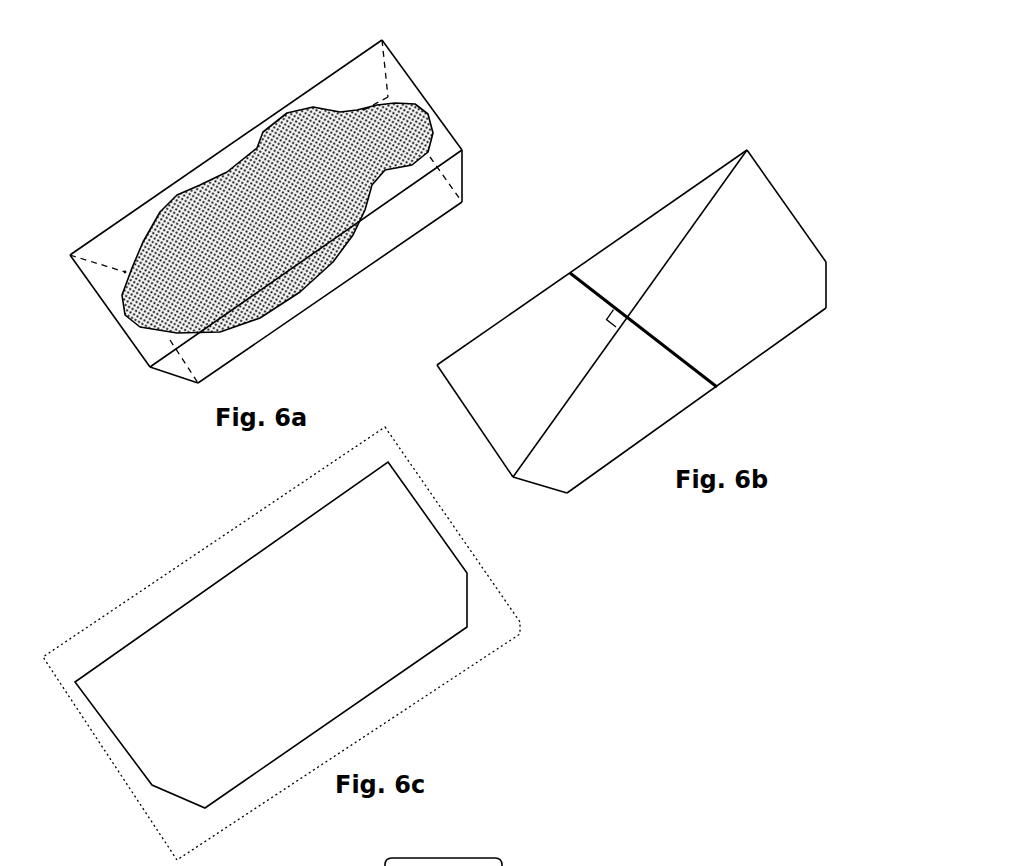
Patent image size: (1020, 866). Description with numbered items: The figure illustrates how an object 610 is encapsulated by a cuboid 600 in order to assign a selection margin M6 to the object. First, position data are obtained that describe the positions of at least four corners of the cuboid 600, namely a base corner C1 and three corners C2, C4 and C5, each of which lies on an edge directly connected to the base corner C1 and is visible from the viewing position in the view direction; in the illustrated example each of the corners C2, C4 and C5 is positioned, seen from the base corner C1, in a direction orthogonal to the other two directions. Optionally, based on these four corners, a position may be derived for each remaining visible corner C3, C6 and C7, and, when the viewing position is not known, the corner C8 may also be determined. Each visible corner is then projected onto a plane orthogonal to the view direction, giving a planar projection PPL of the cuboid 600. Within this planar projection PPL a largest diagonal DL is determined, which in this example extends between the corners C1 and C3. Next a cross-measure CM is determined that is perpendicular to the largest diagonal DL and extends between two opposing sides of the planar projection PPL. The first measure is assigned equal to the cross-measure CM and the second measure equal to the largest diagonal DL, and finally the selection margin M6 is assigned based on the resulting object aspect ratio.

In FIG. 6A, the cuboid 600 is at (280, 229).
In FIG. 6A, the object 610 is at (277, 195).
In FIG. 6A, the base corner C1 is at (392, 81).
In FIG. 6B, the base corner C1 is at (793, 194).
In FIG. 6A, the corner C2 is at (345, 251).
In FIG. 6B, the corner C2 is at (865, 278).
In FIG. 6A, the corner C3 is at (131, 381).
In FIG. 6B, the corner C3 is at (515, 473).
In FIG. 6A, the corner C4 is at (201, 203).
In FIG. 6B, the corner C4 is at (551, 259).
In FIG. 6A, the corner C5 is at (428, 132).
In FIG. 6A, the corner C6 is at (369, 284).
In FIG. 6B, the corner C6 is at (735, 395).
In FIG. 6A, the corner C7 is at (159, 393).
In FIG. 6B, the corner C7 is at (578, 515).
In FIG. 6A, the corner C8 is at (84, 220).
In FIG. 6B, the largest diagonal DL is at (632, 313).
In FIG. 6B, the planar projection PPL is at (561, 330).
In FIG. 6C, the planar projection PPL is at (271, 635).
In FIG. 6B, the cross-measure CM is at (559, 332).
In FIG. 6C, the selection margin M6 is at (318, 643).